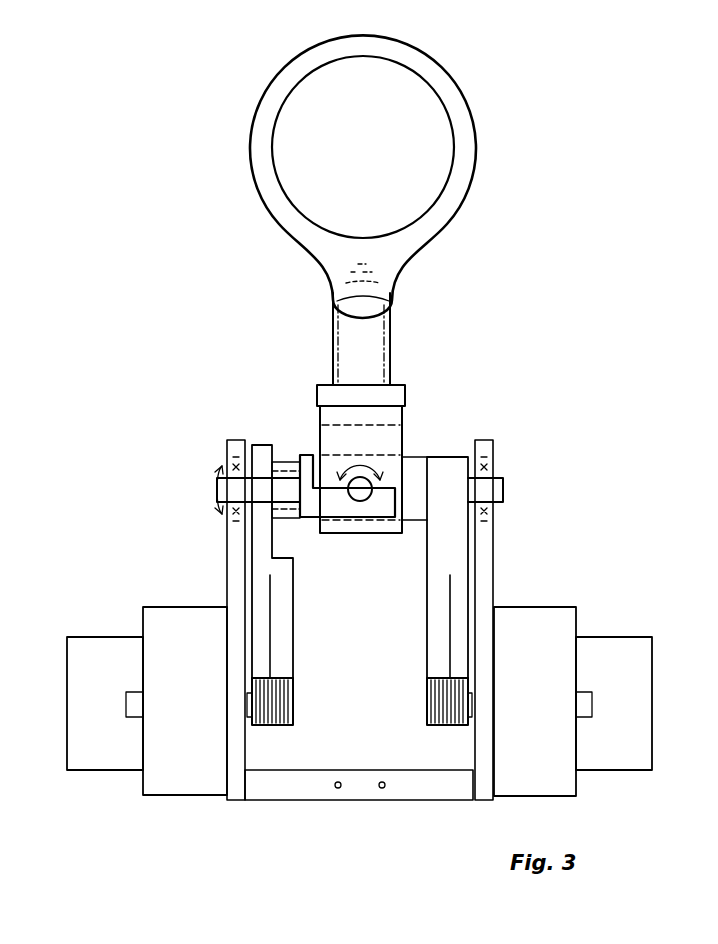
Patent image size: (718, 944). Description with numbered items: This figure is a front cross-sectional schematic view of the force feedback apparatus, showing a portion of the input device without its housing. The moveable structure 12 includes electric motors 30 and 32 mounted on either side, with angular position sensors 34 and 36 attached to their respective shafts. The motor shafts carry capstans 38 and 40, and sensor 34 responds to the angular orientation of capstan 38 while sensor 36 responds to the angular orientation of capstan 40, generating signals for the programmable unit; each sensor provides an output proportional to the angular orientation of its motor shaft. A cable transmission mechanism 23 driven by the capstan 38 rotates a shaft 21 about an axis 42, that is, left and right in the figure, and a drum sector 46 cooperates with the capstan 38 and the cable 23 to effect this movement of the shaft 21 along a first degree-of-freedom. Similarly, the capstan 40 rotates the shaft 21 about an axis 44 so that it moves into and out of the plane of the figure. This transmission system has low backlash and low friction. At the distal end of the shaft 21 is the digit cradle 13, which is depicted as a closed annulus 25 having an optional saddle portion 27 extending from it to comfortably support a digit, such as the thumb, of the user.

The moveable structure 12 is at (513, 366).
The digit cradle 13 is at (477, 133).
The closed annulus 25 is at (268, 108).
The saddle portion 27 is at (370, 287).
The shaft 21 is at (390, 345).
The axis 42 is at (358, 501).
The axis 44 is at (217, 489).
The cable transmission mechanism 23 is at (452, 604).
The drum sector 46 is at (432, 661).
The capstan 40 is at (275, 726).
The capstan 38 is at (443, 726).
The electric motor 32 is at (175, 607).
The angular position sensor 36 is at (99, 637).
The electric motor 30 is at (551, 582).
The angular position sensor 34 is at (628, 612).